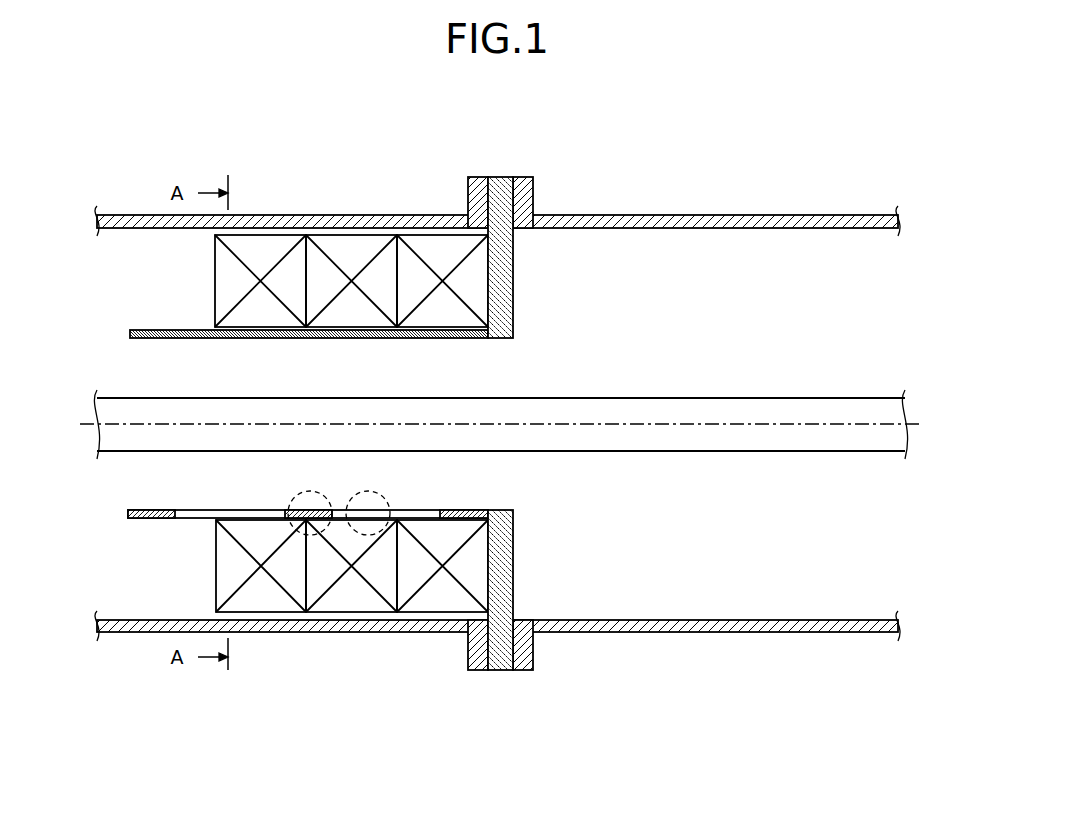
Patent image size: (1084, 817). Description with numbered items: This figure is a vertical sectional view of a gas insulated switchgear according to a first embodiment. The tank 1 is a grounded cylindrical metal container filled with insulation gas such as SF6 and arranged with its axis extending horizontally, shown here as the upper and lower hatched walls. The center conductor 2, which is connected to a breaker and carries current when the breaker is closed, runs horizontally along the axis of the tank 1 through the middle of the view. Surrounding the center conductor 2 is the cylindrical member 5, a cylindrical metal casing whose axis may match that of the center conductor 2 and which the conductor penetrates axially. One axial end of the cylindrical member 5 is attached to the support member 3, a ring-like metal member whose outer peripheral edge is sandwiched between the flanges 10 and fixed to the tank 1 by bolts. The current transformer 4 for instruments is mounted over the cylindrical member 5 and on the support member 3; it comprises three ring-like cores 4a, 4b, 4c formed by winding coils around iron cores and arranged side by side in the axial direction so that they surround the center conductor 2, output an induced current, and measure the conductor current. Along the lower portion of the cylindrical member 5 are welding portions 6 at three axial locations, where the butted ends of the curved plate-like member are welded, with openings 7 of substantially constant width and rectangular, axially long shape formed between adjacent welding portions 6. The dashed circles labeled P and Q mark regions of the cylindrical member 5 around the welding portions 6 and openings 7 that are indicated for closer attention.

The tank 1 is at (385, 215).
The center conductor 2 is at (625, 398).
The support member 3 is at (503, 177).
The current transformer for instruments 4 is at (351, 494).
The core 4a is at (272, 600).
The core 4b is at (355, 600).
The core 4c is at (442, 613).
The cylindrical member 5 is at (178, 330).
The welding portions 6 is at (156, 510).
The openings 7 is at (215, 510).
The flanges 10 is at (478, 177).
The region P is at (315, 492).
The region Q is at (377, 492).